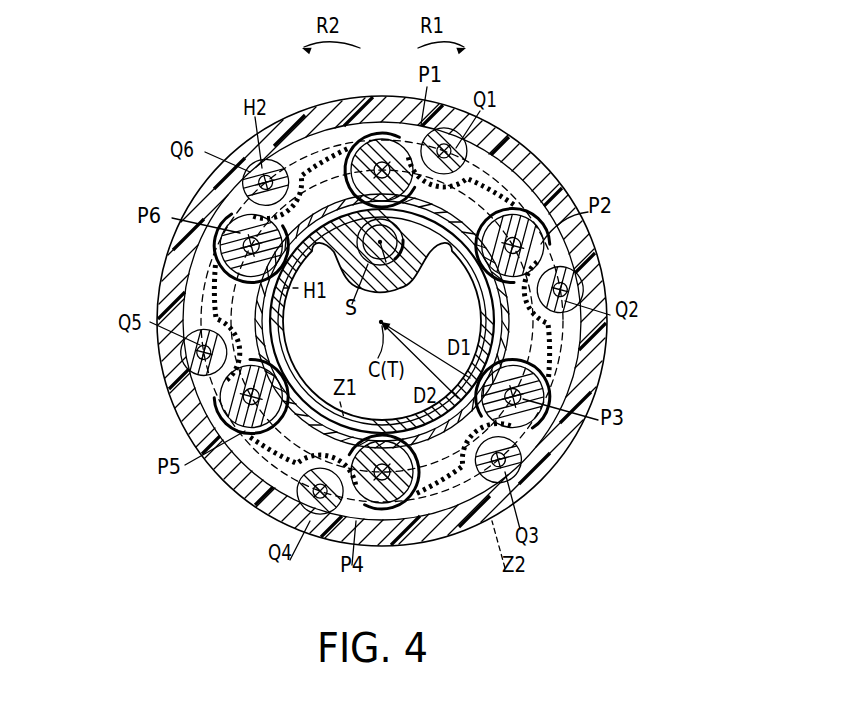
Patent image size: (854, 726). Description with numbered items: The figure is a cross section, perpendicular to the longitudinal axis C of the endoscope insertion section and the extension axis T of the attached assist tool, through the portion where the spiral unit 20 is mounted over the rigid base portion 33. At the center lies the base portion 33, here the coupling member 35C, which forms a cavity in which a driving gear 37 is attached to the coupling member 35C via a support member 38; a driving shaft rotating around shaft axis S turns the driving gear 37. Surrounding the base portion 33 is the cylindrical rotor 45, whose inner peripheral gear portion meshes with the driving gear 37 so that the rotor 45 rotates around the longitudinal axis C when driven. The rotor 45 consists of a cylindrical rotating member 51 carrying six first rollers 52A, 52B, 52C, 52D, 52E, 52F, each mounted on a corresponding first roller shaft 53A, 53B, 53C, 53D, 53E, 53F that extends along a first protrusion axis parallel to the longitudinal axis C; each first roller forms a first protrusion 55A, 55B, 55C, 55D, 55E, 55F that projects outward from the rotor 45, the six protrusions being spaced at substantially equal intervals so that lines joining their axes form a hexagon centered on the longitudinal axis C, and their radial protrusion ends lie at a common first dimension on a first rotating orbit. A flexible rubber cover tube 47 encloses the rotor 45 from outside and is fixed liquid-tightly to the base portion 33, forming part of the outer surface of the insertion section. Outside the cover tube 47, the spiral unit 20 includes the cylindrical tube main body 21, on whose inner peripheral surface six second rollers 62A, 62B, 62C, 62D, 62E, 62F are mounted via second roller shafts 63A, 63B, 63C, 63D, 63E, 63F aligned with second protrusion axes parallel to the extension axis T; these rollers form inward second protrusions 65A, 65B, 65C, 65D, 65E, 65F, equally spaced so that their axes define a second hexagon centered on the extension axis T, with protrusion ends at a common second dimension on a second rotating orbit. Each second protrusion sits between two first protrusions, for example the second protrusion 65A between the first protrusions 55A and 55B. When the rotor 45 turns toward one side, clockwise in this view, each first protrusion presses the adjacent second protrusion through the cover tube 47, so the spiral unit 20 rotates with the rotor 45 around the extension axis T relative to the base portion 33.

The spiral unit 20 is at (382, 300).
The tube main body 21 is at (346, 100).
The base portion 33 is at (382, 321).
The coupling member 35C is at (306, 390).
The driving gear 37 is at (388, 262).
The support member 38 is at (419, 254).
The rotor 45 is at (454, 522).
The cover tube 47 is at (272, 505).
The cylindrical rotating member 51 is at (600, 345).
The first roller 52A is at (431, 122).
The first roller 52B is at (546, 258).
The first roller 52C is at (556, 439).
The first roller 52D is at (371, 514).
The first roller 52E is at (218, 385).
The first roller 52F is at (205, 203).
The first protrusion 55A is at (379, 130).
The first protrusion 55B is at (522, 212).
The first protrusion 55C is at (528, 378).
The first protrusion 55D is at (402, 512).
The first protrusion 55E is at (262, 442).
The first protrusion 55F is at (238, 262).
The first roller shaft 53A is at (352, 152).
The first roller shaft 53B is at (518, 228).
The first roller shaft 53C is at (514, 393).
The first roller shaft 53D is at (383, 505).
The first roller shaft 53E is at (246, 396).
The first roller shaft 53F is at (240, 243).
The second roller 62A is at (465, 121).
The second roller 62B is at (607, 288).
The second roller 62C is at (560, 459).
The second roller 62D is at (305, 527).
The second roller 62E is at (150, 353).
The second roller 62F is at (230, 168).
The second protrusion 65A is at (449, 135).
The second protrusion 65B is at (583, 291).
The second protrusion 65C is at (525, 456).
The second protrusion 65D is at (320, 516).
The second protrusion 65E is at (188, 355).
The second protrusion 65F is at (258, 165).
The second roller shaft 63A is at (451, 150).
The second roller shaft 63B is at (564, 287).
The second roller shaft 63C is at (508, 461).
The second roller shaft 63D is at (318, 496).
The second roller shaft 63E is at (203, 360).
The second roller shaft 63F is at (258, 182).